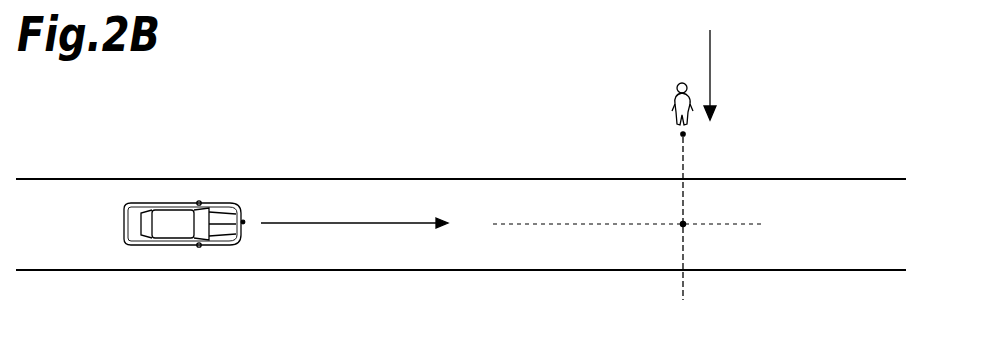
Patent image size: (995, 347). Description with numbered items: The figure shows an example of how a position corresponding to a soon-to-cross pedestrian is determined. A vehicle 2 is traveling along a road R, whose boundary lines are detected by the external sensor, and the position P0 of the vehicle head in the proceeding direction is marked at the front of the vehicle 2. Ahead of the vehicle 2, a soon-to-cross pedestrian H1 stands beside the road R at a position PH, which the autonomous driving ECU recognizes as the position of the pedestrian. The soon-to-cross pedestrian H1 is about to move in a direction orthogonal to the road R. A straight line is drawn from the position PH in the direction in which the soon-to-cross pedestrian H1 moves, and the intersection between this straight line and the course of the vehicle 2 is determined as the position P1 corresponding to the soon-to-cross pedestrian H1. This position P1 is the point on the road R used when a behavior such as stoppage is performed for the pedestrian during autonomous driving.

The vehicle 2 is at (167, 203).
The position of vehicle head P0 is at (243, 222).
The position corresponding to soon-to-cross pedestrian P1 is at (685, 224).
The position of soon-to-cross pedestrian PH is at (686, 134).
The soon-to-cross pedestrian H1 is at (678, 82).
The road R is at (867, 174).